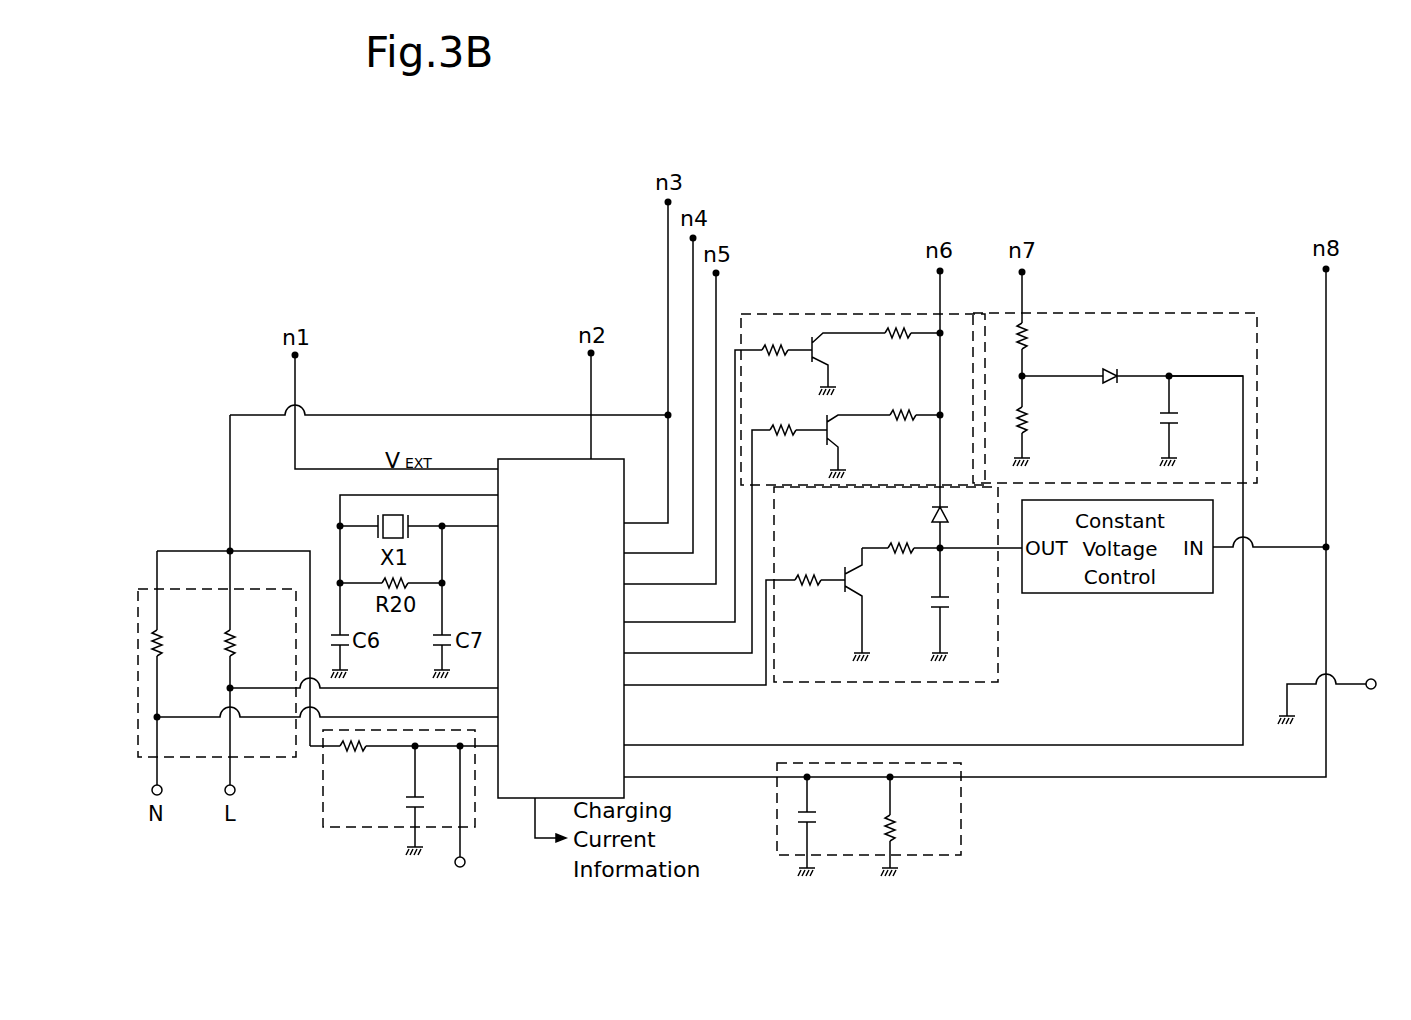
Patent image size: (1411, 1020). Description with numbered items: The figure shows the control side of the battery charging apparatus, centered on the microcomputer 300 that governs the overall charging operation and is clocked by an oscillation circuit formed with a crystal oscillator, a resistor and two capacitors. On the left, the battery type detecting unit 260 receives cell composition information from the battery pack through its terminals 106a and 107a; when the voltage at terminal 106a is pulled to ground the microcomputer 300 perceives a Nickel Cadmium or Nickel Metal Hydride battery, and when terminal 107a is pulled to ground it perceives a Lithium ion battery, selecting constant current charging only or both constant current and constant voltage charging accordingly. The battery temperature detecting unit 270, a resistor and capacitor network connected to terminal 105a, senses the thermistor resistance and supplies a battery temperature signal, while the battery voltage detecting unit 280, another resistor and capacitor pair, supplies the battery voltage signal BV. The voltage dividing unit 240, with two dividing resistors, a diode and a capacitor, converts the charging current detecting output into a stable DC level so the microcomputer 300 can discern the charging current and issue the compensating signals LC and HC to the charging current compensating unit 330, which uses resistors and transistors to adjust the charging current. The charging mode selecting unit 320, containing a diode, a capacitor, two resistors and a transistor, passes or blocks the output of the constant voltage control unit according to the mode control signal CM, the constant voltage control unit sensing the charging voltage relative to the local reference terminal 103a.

The microcomputer 300 is at (517, 459).
The battery type detecting unit 260 is at (138, 665).
The battery temperature detecting unit 270 is at (349, 830).
The battery voltage detecting unit 280 is at (963, 818).
The charging mode selecting unit 320 is at (1000, 656).
The charging current compensating unit 330 is at (839, 313).
The voltage dividing unit 240 is at (1211, 311).
The local reference terminal 103a is at (1371, 690).
The temperature terminal of the charging apparatus 105a is at (460, 867).
The terminal of the battery type detecting unit 106a is at (152, 790).
The terminal of the battery type detecting unit 107a is at (235, 790).